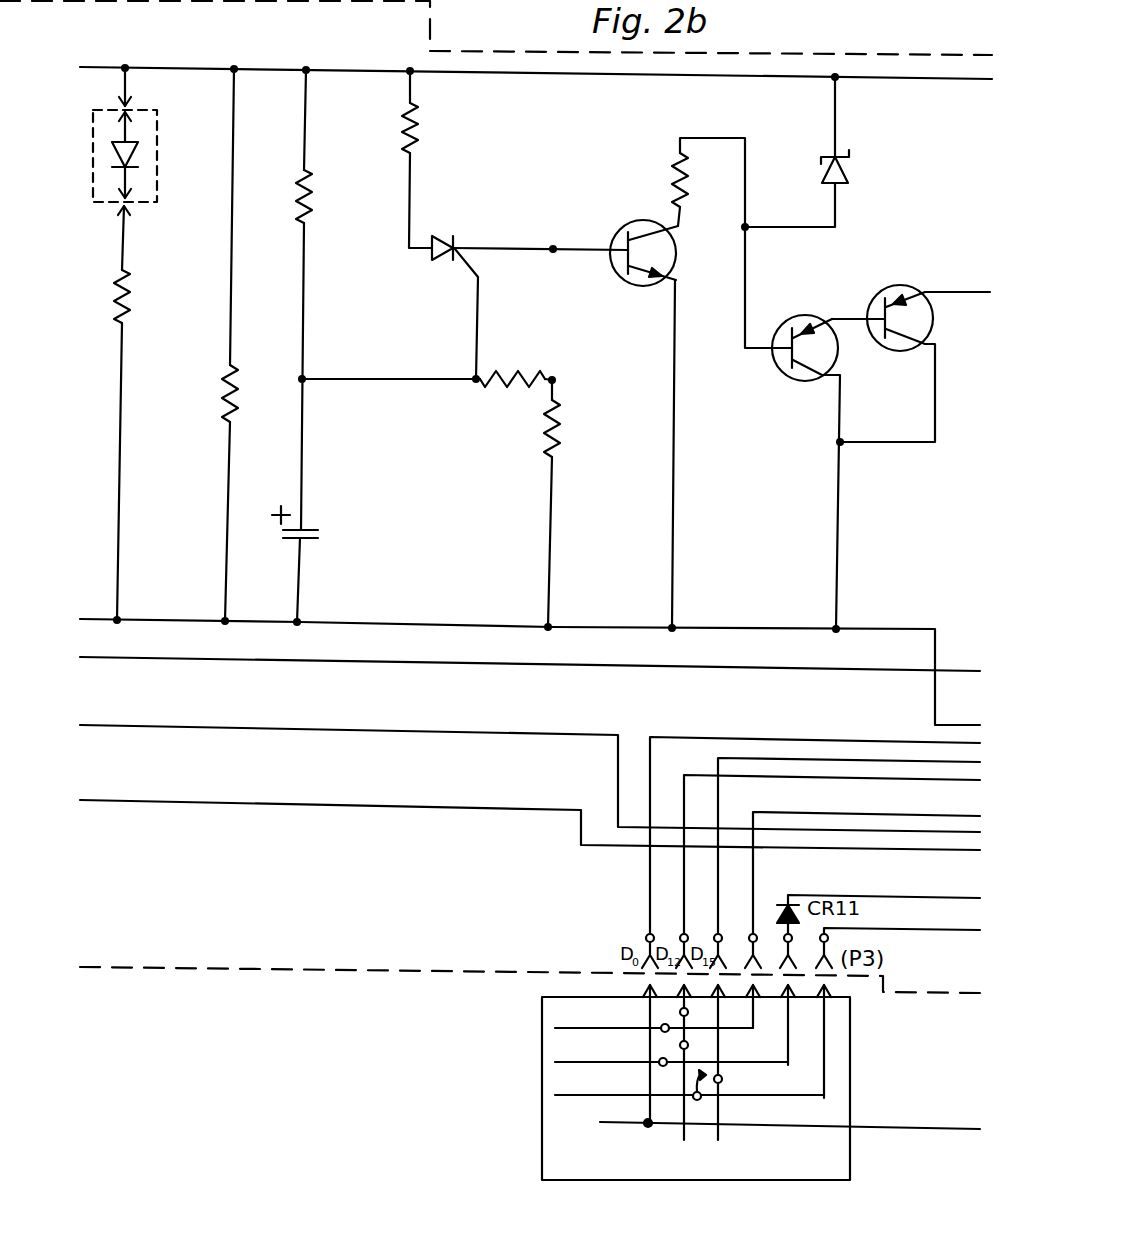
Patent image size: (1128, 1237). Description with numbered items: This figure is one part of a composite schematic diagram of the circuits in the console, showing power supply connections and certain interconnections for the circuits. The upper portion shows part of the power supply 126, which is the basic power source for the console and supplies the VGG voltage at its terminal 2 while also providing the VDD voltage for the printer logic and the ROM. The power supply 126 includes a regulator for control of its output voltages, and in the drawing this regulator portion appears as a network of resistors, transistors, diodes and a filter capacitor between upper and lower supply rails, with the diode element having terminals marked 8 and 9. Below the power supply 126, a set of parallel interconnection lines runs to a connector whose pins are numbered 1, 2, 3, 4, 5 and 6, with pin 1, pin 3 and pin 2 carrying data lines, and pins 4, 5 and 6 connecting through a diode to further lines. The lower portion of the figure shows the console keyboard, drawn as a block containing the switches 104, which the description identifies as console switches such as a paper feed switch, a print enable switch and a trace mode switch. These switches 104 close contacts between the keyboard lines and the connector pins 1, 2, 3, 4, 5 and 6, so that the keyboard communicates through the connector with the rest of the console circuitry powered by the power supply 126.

The power supply 126 is at (438, 471).
The switches 104 is at (820, 1171).
The CR14 terminal 8 is at (132, 127).
The CR14 terminal 9 is at (111, 238).
The connector P3 pin 1 is at (646, 941).
The terminal 2 is at (713, 944).
The connector P3 pin 3 is at (679, 941).
The connector P3 pin 4 is at (748, 944).
The connector P3 pin 5 is at (784, 944).
The connector P3 pin 6 is at (820, 944).